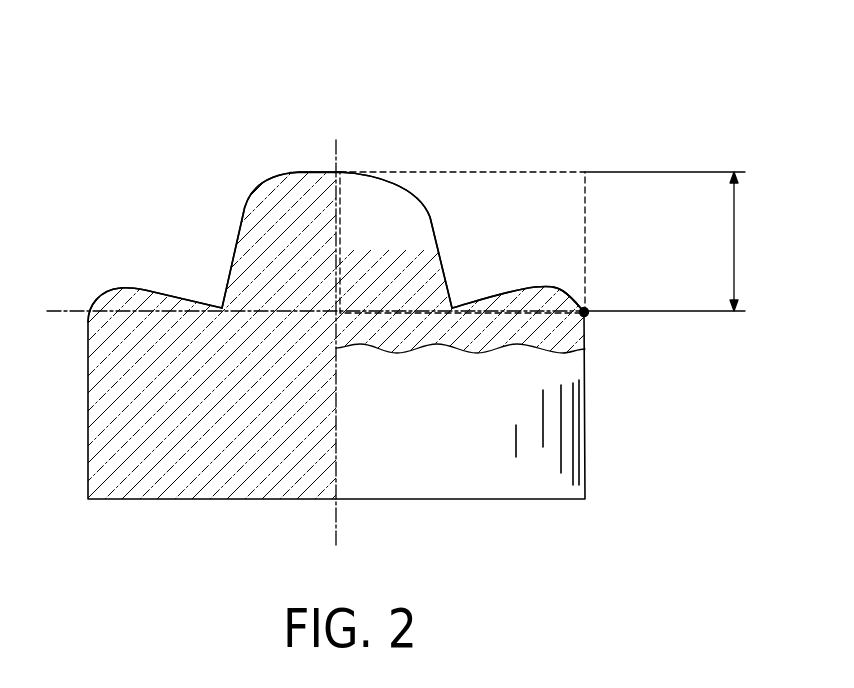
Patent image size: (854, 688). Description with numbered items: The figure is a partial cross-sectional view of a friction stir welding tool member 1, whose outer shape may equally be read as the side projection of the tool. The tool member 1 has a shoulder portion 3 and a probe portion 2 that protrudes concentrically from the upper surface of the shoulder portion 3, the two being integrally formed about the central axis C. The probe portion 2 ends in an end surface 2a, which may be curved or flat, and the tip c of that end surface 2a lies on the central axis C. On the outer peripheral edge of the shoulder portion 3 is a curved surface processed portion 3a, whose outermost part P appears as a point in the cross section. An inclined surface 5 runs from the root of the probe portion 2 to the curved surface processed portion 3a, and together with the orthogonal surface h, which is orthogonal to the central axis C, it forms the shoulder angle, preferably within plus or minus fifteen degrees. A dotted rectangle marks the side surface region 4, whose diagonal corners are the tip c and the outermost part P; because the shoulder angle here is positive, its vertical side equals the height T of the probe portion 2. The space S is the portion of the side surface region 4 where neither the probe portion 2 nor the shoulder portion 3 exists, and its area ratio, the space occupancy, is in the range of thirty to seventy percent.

The friction stir welding tool member 1 is at (130, 97).
The probe portion 2 is at (283, 213).
The end surface of the probe portion 2a is at (300, 172).
The shoulder portion 3 is at (580, 297).
The curved surface processed portion 3a is at (586, 303).
The side surface region 4 is at (545, 172).
The inclined surface 5 is at (166, 296).
The space S is at (500, 225).
The tip of the probe portion c is at (340, 172).
The central axis C is at (338, 356).
The orthogonal surface h is at (307, 310).
The height of the probe portion T is at (665, 241).
The outermost part of the curved surface processed portion P is at (589, 317).